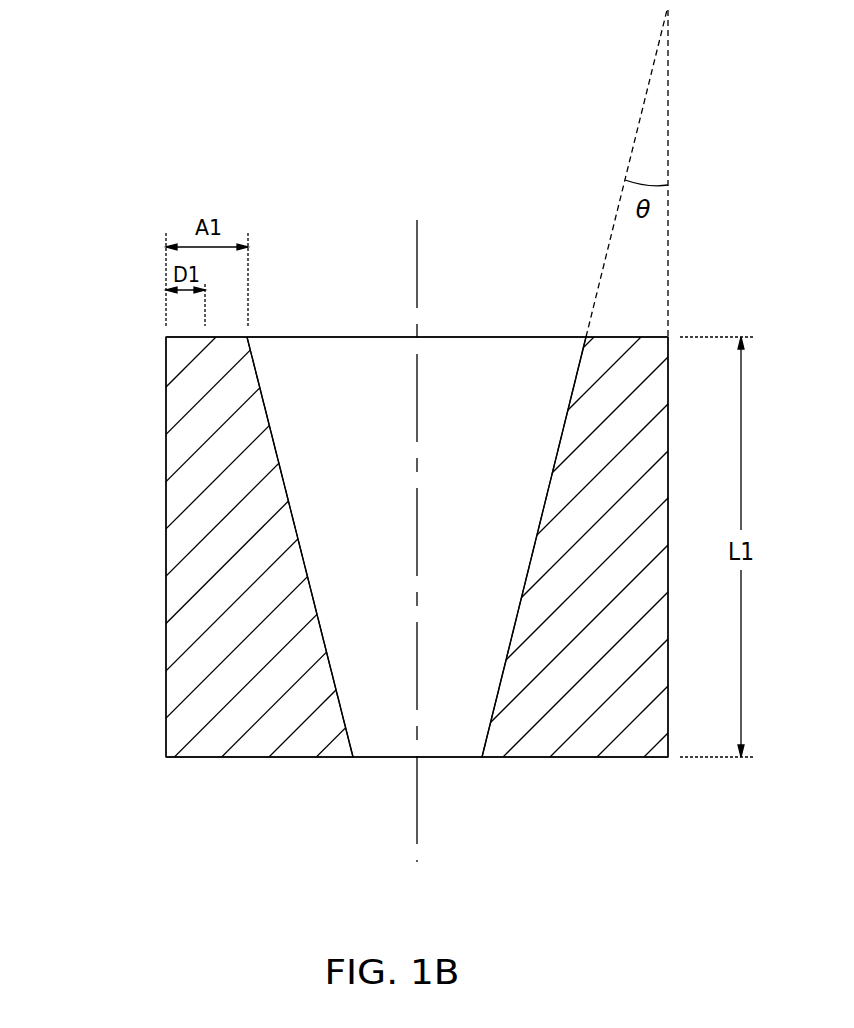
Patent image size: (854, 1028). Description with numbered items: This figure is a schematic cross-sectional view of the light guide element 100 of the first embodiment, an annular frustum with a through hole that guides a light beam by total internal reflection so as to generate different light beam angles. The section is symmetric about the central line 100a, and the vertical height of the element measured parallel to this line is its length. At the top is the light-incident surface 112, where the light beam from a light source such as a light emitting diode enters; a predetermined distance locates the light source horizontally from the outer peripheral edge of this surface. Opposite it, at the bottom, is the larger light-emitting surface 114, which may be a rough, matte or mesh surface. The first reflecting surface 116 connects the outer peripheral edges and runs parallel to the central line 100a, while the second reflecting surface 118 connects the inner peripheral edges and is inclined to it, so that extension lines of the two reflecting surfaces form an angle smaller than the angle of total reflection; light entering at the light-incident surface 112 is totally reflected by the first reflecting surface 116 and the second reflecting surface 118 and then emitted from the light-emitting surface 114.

The light guide element 100 is at (124, 131).
The central line 100a is at (419, 250).
The light-incident surface 112 is at (647, 335).
The light-emitting surface 114 is at (188, 758).
The first reflecting surface 116 is at (166, 545).
The second reflecting surface 118 is at (270, 430).